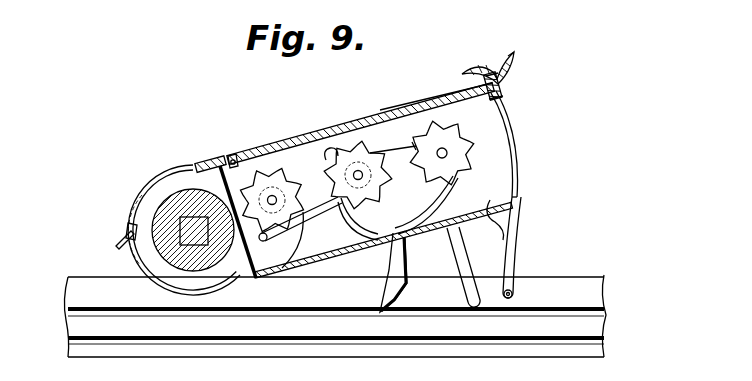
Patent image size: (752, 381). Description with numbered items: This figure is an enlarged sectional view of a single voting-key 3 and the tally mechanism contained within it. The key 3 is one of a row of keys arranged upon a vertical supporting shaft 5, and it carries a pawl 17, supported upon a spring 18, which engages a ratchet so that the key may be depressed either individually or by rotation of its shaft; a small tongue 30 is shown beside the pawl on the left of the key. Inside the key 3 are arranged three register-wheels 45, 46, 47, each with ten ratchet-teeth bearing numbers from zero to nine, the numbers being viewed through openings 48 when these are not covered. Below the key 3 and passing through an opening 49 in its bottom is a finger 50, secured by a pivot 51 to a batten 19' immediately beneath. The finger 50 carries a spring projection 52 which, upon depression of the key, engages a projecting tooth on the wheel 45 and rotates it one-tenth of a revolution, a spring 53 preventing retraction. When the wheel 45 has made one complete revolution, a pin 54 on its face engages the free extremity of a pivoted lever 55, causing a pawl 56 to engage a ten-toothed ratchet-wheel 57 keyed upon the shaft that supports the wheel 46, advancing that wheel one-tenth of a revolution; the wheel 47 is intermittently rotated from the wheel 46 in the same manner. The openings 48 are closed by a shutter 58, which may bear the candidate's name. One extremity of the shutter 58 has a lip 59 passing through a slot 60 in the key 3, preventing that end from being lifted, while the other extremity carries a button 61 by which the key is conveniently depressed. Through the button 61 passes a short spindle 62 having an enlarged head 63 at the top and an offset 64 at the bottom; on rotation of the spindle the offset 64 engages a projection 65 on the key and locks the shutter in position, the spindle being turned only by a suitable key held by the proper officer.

The voting-key 3 is at (519, 160).
The supporting shaft 5 is at (181, 216).
The pawl 17 is at (127, 225).
The spring 18 is at (161, 181).
The batten 19' is at (335, 310).
The tongue 30 is at (116, 247).
The register-wheel 45 is at (449, 160).
The register-wheel 46 is at (381, 197).
The register-wheel 47 is at (272, 200).
The openings 48 is at (431, 100).
The opening 49 is at (519, 188).
The finger 50 is at (522, 245).
The pivot 51 is at (512, 291).
The spring projection 52 is at (487, 223).
The spring 53 is at (448, 200).
The pin 54 is at (441, 152).
The pivoted lever 55 is at (393, 138).
The pawl 56 is at (358, 175).
The ratchet-wheel 57 is at (322, 164).
The shutter 58 is at (326, 130).
The lip 59 is at (234, 156).
The slot 60 is at (234, 173).
The button 61 is at (510, 67).
The spindle 62 is at (503, 87).
The head 63 is at (491, 70).
The offset 64 is at (501, 98).
The projection 65 is at (493, 96).